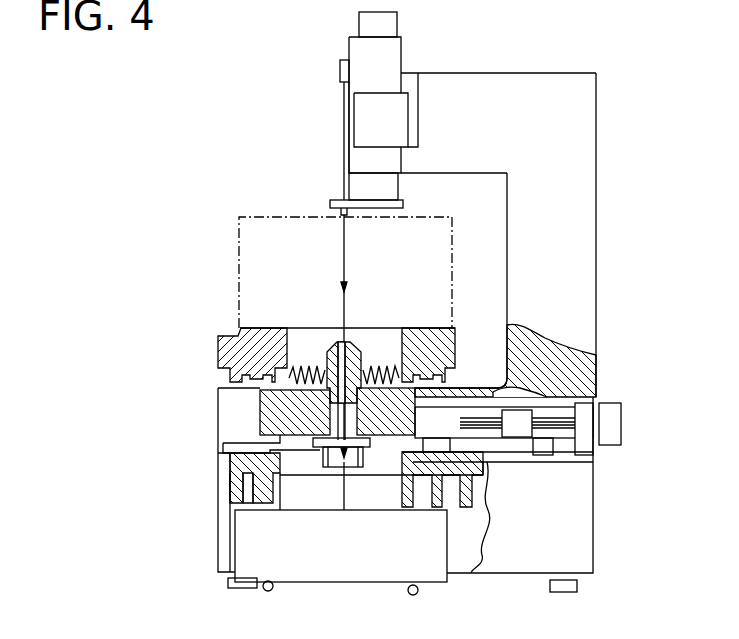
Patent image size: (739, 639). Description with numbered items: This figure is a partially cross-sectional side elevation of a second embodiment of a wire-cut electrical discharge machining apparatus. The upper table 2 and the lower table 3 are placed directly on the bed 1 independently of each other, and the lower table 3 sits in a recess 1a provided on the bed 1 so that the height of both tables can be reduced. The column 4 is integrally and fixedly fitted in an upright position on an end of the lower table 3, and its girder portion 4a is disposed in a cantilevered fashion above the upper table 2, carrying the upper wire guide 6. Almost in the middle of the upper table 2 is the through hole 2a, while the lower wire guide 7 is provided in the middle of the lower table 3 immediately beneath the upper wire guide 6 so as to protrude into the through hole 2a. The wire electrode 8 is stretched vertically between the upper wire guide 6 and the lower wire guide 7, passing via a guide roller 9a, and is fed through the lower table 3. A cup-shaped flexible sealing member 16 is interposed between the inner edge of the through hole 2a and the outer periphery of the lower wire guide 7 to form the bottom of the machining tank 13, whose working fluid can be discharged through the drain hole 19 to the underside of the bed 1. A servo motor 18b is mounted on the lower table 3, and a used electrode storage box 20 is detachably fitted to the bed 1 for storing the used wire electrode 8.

The bed 1 is at (580, 527).
The recess 1a is at (228, 440).
The upper table 2 is at (222, 365).
The through hole 2a is at (312, 338).
The lower table 3 is at (258, 420).
The column 4 is at (578, 265).
The girder portion 4a is at (487, 80).
The upper wire guide 6 is at (335, 213).
The lower wire guide 7 is at (330, 362).
The wire electrode 8 is at (340, 268).
The guide roller 9a is at (340, 70).
The machining tank 13 is at (235, 252).
The sealing member 16 is at (290, 330).
The servo motor 18b is at (622, 417).
The drain hole 19 is at (318, 392).
The used electrode storage box 20 is at (345, 600).